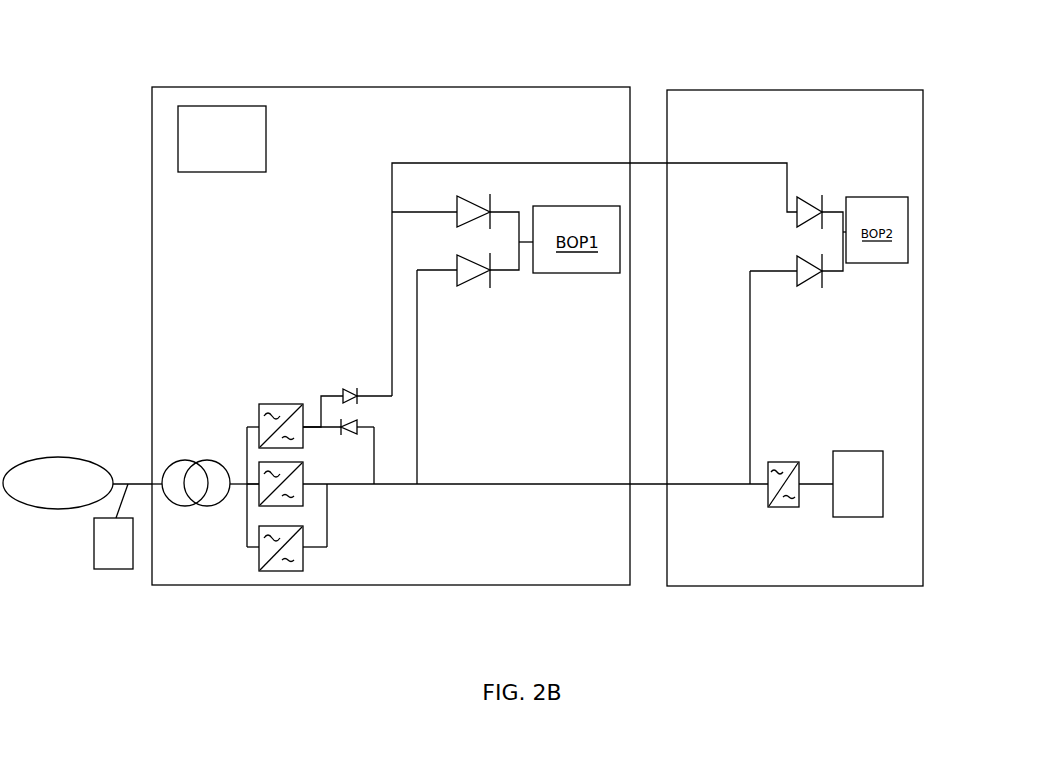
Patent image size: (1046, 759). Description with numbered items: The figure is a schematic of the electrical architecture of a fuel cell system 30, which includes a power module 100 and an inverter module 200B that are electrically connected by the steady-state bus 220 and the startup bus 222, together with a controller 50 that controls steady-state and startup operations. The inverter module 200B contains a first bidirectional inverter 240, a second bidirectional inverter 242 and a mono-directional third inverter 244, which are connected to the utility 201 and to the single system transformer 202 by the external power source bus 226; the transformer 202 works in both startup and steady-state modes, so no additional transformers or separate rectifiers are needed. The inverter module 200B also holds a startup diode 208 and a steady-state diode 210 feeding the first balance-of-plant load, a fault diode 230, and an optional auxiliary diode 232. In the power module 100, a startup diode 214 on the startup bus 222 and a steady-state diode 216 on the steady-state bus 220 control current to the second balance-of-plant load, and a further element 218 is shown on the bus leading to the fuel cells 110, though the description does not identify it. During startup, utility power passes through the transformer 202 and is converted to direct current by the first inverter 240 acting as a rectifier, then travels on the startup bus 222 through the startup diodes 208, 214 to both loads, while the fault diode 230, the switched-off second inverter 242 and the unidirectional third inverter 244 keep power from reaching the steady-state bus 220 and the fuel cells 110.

The inverter module 200B is at (392, 87).
The power module 100 is at (796, 90).
The fuel cell system 30 is at (503, 631).
The controller 50 is at (212, 151).
The fuel cells 110 is at (837, 520).
The utility 201 is at (58, 453).
The external power source bus 226 is at (148, 482).
The system transformer 202 is at (173, 502).
The steady-state bus 220 is at (418, 403).
The startup bus 222 is at (578, 163).
The startup diode 208 is at (470, 205).
The steady-state diode 210 is at (468, 280).
The startup diode 214 is at (805, 210).
The steady-state diode 216 is at (810, 283).
The auxiliary diode 232 is at (343, 392).
The fault diode 230 is at (357, 432).
The first bidirectional inverter 240 is at (257, 408).
The second bidirectional inverter 242 is at (303, 485).
The mono-directional third inverter 244 is at (258, 580).
The DC/DC converter 218 is at (773, 510).